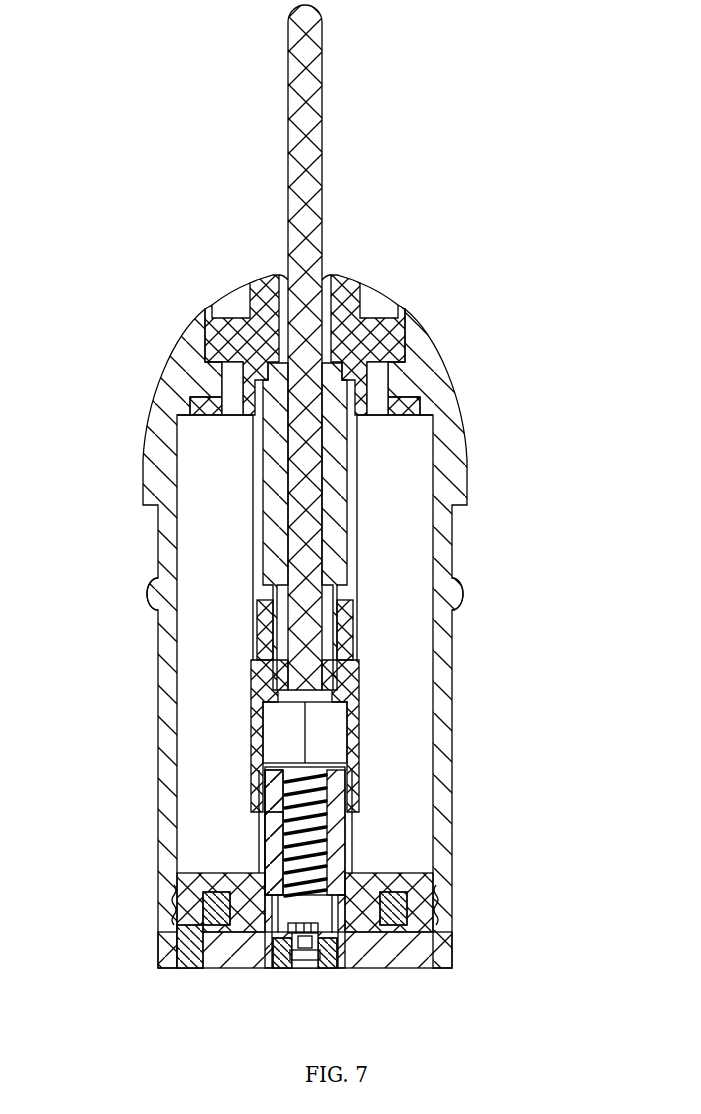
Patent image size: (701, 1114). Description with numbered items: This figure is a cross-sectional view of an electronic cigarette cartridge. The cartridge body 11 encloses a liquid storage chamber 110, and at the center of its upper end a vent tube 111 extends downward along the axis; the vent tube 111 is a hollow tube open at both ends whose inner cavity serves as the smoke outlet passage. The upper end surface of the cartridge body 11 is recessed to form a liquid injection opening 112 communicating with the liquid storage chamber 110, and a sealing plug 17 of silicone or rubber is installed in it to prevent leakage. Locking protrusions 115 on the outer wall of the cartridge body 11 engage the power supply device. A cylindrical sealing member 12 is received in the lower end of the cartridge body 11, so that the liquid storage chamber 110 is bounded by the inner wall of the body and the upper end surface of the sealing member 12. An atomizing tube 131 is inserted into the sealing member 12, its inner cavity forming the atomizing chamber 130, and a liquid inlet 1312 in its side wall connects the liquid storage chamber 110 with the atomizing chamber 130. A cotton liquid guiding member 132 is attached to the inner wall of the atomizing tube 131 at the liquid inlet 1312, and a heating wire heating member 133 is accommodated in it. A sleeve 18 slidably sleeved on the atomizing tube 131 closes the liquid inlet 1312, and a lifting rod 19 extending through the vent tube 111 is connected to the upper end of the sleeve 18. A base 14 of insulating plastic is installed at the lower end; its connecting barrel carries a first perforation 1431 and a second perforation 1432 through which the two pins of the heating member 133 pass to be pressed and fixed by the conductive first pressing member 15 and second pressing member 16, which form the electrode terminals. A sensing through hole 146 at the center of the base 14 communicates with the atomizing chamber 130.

The cartridge body 11 is at (443, 537).
The liquid storage chamber 110 is at (393, 648).
The vent tube 111 is at (337, 492).
The liquid injection opening 112 is at (400, 385).
The locking protrusions 115 is at (455, 595).
The sealing member 12 is at (175, 890).
The atomizing chamber 130 is at (310, 823).
The atomizing tube 131 is at (345, 790).
The liquid inlet 1312 is at (352, 840).
The liquid guiding member 132 is at (273, 810).
The heating member 133 is at (282, 850).
The base 14 is at (435, 927).
The first perforation 1431 is at (263, 950).
The second perforation 1432 is at (350, 950).
The sensing through hole 146 is at (302, 968).
The first pressing member 15 is at (178, 940).
The second pressing member 16 is at (390, 958).
The sealing plug 17 is at (400, 327).
The sleeve 18 is at (357, 730).
The lifting rod 19 is at (315, 163).